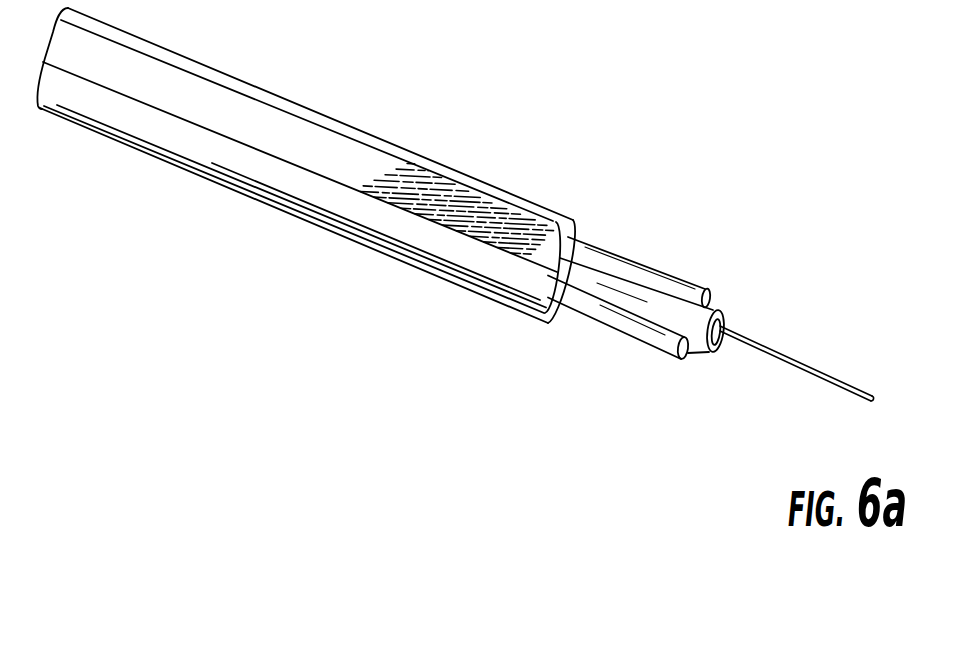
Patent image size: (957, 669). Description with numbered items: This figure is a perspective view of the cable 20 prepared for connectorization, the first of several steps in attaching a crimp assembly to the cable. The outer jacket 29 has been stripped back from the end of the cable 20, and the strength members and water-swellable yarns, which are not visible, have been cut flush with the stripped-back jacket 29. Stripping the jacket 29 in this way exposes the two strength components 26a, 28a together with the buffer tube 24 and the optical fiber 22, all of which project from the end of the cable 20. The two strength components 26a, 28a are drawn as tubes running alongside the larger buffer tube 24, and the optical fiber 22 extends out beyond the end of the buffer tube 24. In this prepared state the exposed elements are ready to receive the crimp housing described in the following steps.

The cable 20 is at (213, 190).
The optical fiber 22 is at (802, 367).
The buffer tube 24 is at (603, 289).
The strength component 26a is at (634, 328).
The strength component 28a is at (620, 257).
The jacket 29 is at (258, 130).